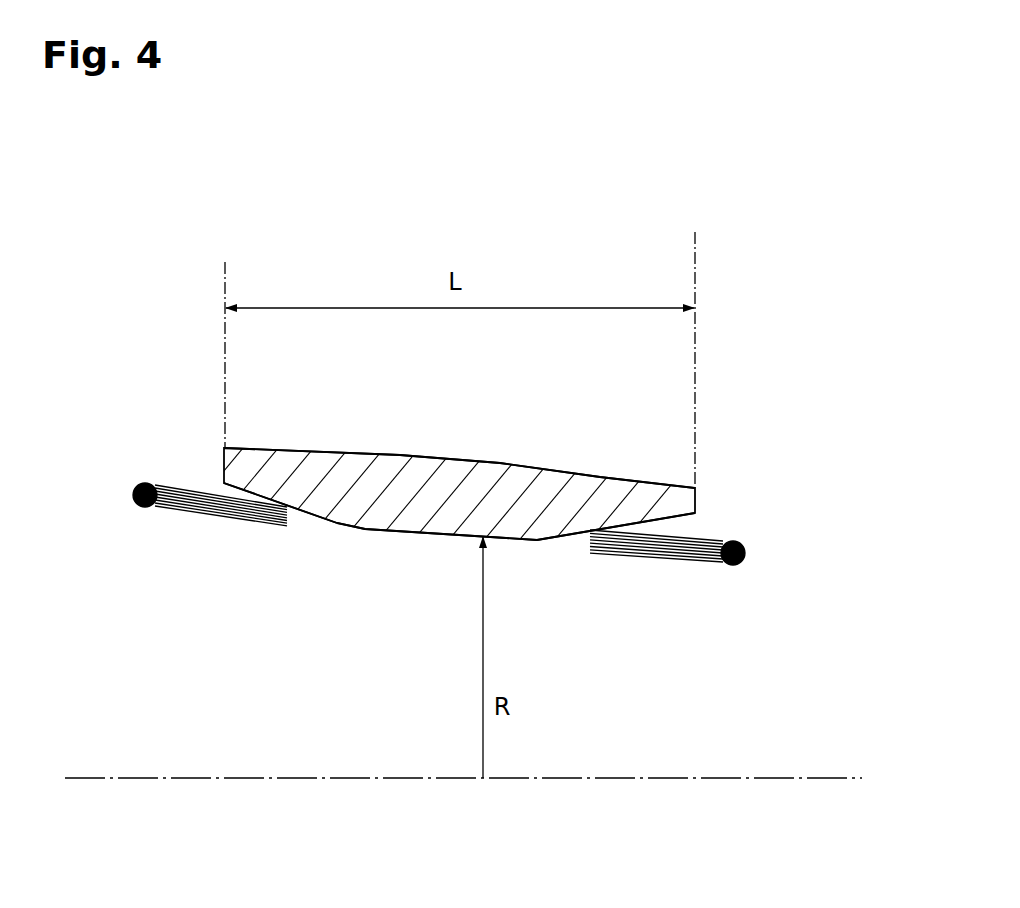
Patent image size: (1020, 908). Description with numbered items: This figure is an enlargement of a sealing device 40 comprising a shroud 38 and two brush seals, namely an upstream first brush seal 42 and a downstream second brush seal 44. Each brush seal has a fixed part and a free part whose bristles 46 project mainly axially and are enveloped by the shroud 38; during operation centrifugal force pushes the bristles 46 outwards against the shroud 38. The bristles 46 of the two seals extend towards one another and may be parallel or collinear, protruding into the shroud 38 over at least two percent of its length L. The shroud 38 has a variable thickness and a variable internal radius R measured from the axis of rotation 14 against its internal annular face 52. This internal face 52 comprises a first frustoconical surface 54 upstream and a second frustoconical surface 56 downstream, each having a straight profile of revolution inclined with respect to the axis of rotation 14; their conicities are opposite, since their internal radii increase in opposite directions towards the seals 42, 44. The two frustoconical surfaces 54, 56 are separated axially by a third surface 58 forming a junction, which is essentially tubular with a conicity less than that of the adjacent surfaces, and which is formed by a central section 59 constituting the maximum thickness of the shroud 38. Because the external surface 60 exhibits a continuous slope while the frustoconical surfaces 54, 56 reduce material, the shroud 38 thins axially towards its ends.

The axis of rotation 14 is at (235, 777).
The shroud 38 is at (445, 457).
The sealing device 40 is at (630, 225).
The first brush seal 42 is at (202, 468).
The second brush seal 44 is at (668, 548).
The bristles 46 is at (205, 510).
The internal annular face 52 is at (423, 660).
The first frustoconical surface 54 is at (337, 524).
The second frustoconical surface 56 is at (562, 536).
The third surface 58 is at (441, 534).
The central section 59 is at (400, 548).
The external surface 60 is at (592, 475).